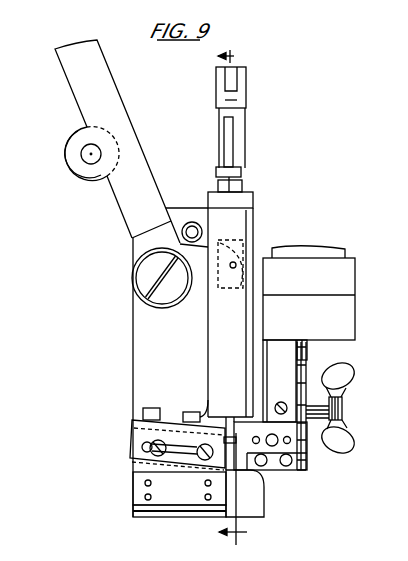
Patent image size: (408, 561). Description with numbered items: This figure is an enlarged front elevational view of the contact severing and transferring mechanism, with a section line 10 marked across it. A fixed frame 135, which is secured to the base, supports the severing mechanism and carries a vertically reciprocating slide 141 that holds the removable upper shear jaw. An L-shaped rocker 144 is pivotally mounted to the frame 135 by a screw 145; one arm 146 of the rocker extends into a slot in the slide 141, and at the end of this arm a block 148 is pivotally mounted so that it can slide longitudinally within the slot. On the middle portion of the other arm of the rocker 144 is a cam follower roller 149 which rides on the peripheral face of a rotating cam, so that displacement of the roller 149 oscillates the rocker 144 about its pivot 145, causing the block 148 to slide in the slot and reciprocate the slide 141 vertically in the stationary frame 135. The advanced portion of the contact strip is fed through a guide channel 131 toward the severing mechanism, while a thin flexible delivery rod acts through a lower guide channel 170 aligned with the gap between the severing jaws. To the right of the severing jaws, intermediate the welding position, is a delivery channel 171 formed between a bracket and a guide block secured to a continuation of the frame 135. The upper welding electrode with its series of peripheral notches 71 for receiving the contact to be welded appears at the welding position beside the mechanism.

The section line 10- 10 is at (243, 294).
The peripheral notches 71 is at (302, 345).
The guide channel 131 is at (132, 424).
The frame 135 is at (137, 318).
The vertically reciprocating slide 141 is at (227, 349).
The L-shaped rocker 144 is at (132, 195).
The screw 145 is at (148, 285).
The arm 146 is at (245, 272).
The block 148 is at (248, 240).
The cam follower roller 149 is at (64, 157).
The lower guide channel 170 is at (130, 457).
The delivery channel 171 is at (277, 468).